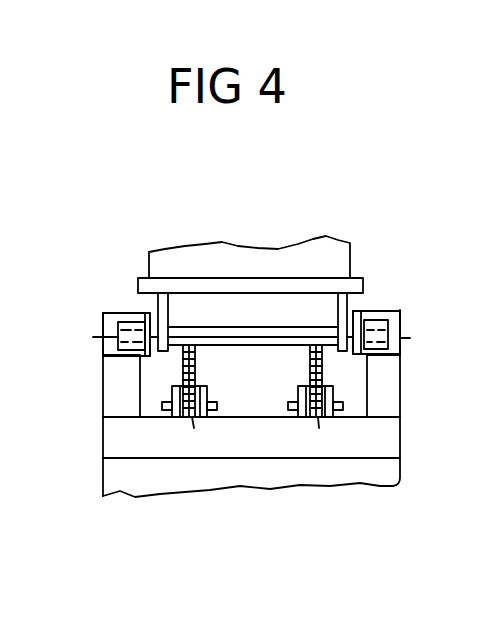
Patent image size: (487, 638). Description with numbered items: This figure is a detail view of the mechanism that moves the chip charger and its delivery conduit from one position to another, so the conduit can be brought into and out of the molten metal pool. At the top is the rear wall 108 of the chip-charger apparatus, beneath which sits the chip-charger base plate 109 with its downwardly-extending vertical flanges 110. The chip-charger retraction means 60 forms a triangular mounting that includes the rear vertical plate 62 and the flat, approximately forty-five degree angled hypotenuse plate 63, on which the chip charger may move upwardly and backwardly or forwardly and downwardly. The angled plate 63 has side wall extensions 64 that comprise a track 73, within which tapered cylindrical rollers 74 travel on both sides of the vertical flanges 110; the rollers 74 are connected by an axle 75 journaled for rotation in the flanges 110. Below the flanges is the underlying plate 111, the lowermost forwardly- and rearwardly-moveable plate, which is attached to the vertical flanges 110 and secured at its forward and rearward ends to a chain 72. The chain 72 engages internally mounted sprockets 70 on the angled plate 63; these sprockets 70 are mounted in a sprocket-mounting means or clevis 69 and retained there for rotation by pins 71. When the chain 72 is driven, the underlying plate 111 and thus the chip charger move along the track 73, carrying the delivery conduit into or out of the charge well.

The chip-charger retraction means 60 is at (408, 414).
The rear vertical plate 62 is at (402, 474).
The angled hypotenuse plate 63 is at (402, 437).
The side wall extensions 64 is at (402, 369).
The sprocket-mounting means or clevis 69 is at (208, 391).
The sprockets 70 is at (255, 438).
The pins 71 is at (340, 406).
The chain 72 is at (197, 363).
The track 73 is at (397, 340).
The tapered cylindrical rollers 74 is at (103, 336).
The axle 75 is at (190, 327).
The rear wall 108 is at (270, 274).
The chip-charger base plate 109 is at (365, 288).
The vertical flanges 110 is at (162, 305).
The underlying plate 111 is at (183, 352).